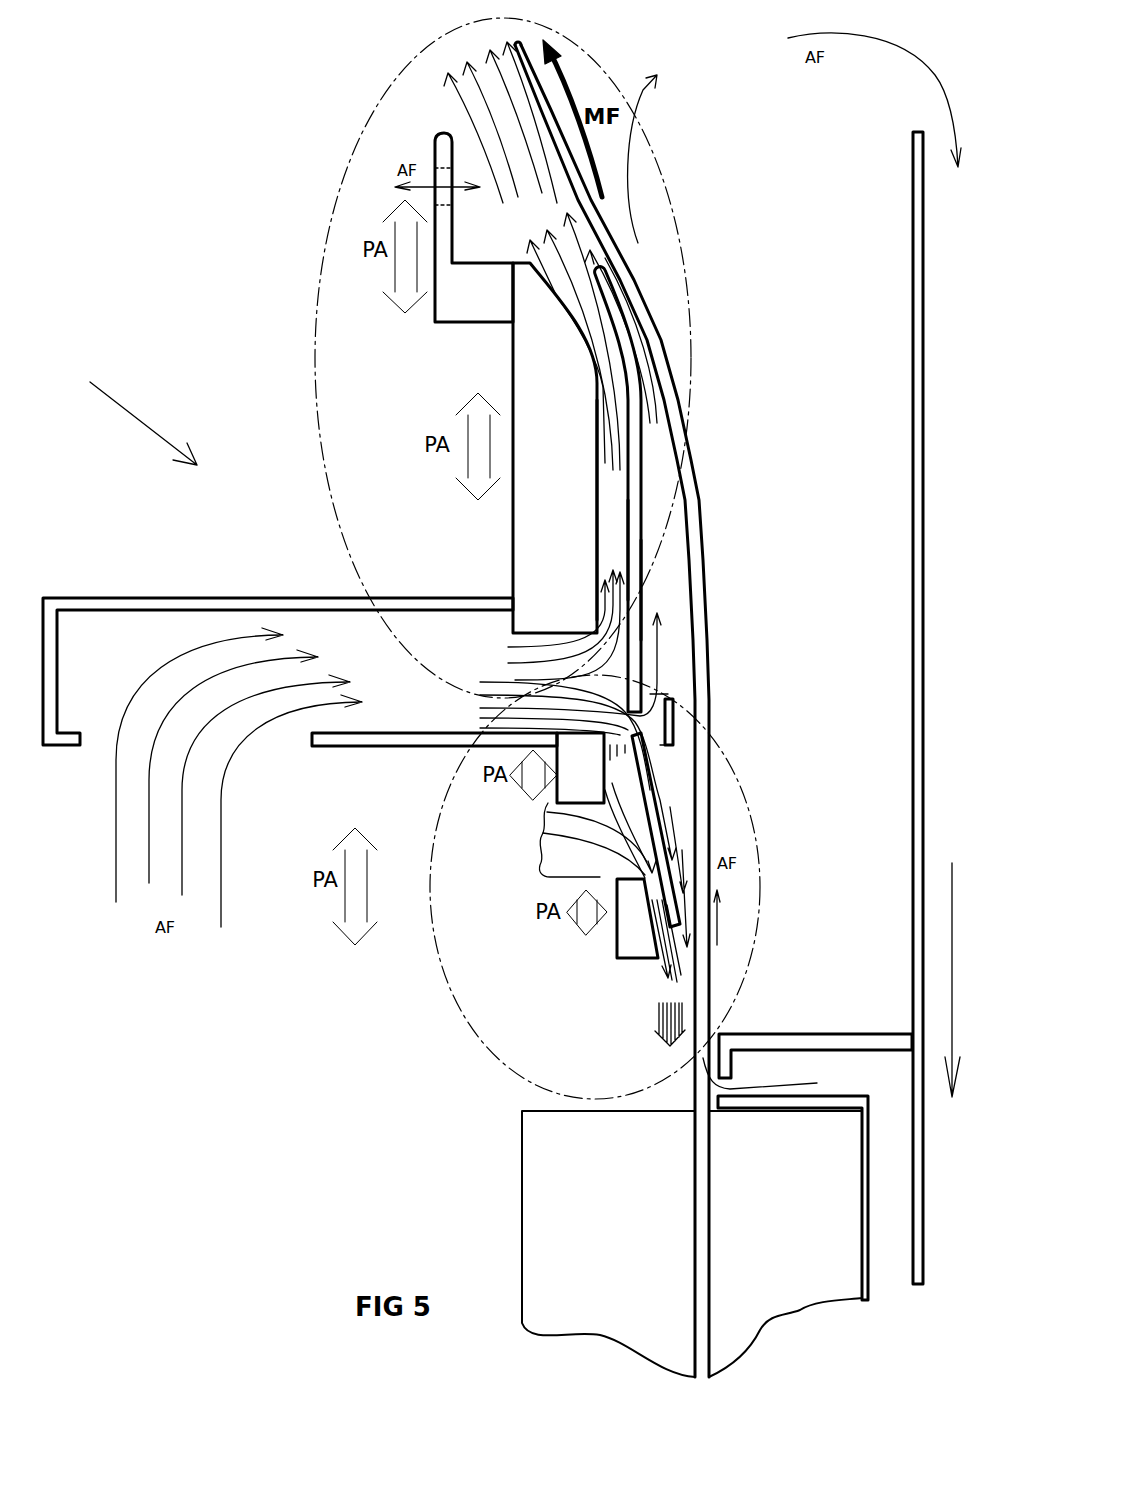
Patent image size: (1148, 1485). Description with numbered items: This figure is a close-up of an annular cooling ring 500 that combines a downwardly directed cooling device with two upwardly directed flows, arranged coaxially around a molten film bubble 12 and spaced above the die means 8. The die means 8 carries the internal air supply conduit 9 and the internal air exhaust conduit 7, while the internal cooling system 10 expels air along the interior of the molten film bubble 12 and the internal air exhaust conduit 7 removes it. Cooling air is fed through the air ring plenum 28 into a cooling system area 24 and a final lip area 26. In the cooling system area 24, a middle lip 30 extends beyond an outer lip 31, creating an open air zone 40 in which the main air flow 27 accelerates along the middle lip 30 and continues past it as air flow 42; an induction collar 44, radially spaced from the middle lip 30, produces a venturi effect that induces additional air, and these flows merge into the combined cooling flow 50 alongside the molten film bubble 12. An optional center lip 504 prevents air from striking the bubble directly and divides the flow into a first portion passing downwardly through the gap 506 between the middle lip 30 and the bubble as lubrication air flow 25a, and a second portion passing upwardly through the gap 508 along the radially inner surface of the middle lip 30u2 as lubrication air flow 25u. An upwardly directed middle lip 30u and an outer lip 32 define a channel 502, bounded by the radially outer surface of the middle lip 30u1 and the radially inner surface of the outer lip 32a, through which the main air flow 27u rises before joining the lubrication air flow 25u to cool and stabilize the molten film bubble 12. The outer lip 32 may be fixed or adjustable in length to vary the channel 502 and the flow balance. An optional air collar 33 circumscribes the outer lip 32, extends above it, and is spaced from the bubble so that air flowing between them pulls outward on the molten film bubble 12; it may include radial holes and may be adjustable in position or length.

The internal air exhaust conduit 7 is at (912, 160).
The die means 8 is at (762, 1213).
The internal air supply conduit 9 is at (868, 1282).
The internal cooling system 10 is at (792, 1058).
The molten film bubble 12 is at (702, 832).
The cooling system area 24 is at (430, 940).
The lubrication air flow 25a is at (672, 810).
The lubrication air flow 25u is at (647, 370).
The final lip area 26 is at (312, 357).
The main air flow 27 is at (625, 802).
The main air flow 27u is at (558, 247).
The air ring plenum 28 is at (80, 637).
The middle lip 30 is at (652, 803).
The middle lip 30u is at (634, 438).
The radially outer surface of the middle lip 30u1 is at (630, 555).
The radially inner surface of the middle lip 30u2 is at (642, 593).
The outer lip 31 is at (578, 795).
The outer lip 32 is at (535, 360).
The radially inner surface of the outer lip 32a is at (600, 495).
The air collar 33 is at (440, 148).
The open air zone 40 is at (540, 840).
The air flow 42 is at (670, 962).
The induction collar 44 is at (632, 947).
The combined cooling flow 50 is at (658, 1033).
The annular cooling ring 500 is at (122, 415).
The channel 502 is at (612, 525).
The center lip 504 is at (674, 718).
The gap 506 is at (672, 740).
The gap 508 is at (660, 693).